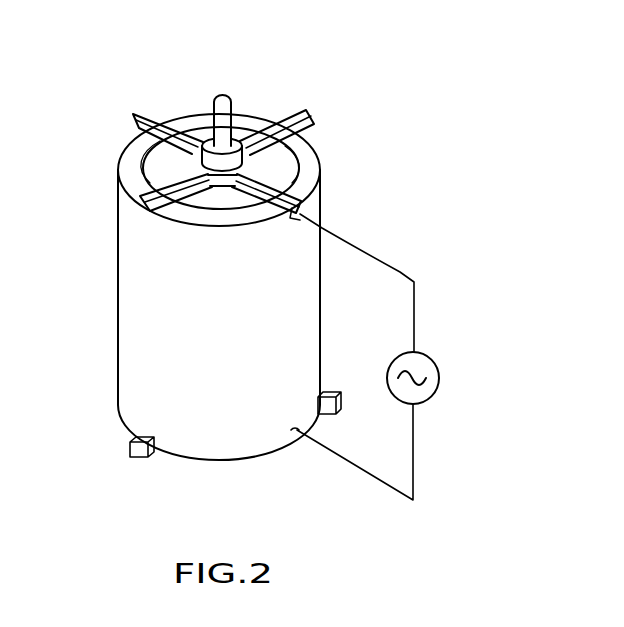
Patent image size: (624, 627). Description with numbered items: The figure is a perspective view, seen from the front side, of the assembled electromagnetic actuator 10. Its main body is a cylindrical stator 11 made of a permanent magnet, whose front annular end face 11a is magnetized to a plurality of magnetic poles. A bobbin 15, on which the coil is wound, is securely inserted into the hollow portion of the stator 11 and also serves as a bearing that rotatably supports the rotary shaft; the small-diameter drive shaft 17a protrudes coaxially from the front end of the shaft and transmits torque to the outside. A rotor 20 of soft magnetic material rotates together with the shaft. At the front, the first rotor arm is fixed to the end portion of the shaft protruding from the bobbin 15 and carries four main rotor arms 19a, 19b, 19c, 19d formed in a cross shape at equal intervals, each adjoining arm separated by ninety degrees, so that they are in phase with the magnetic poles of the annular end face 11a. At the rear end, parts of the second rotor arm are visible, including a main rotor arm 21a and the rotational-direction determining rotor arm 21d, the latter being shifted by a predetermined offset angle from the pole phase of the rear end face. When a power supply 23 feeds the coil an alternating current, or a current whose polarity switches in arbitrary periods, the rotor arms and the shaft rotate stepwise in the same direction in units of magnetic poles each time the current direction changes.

The electromagnetic actuator 10 is at (493, 112).
The stator 11 is at (127, 277).
The annular end face 11a is at (128, 160).
The bobbin 15 is at (153, 145).
The drive shaft 17a is at (232, 110).
The main rotor arm 19a is at (135, 212).
The main rotor arm 19b is at (147, 117).
The main rotor arm 19c is at (310, 117).
The main rotor arm 19d is at (305, 210).
The rotor 20 is at (330, 122).
The main rotor arm 21a is at (131, 452).
The rotational-direction determining rotor arm 21d is at (330, 417).
The power supply 23 is at (432, 396).